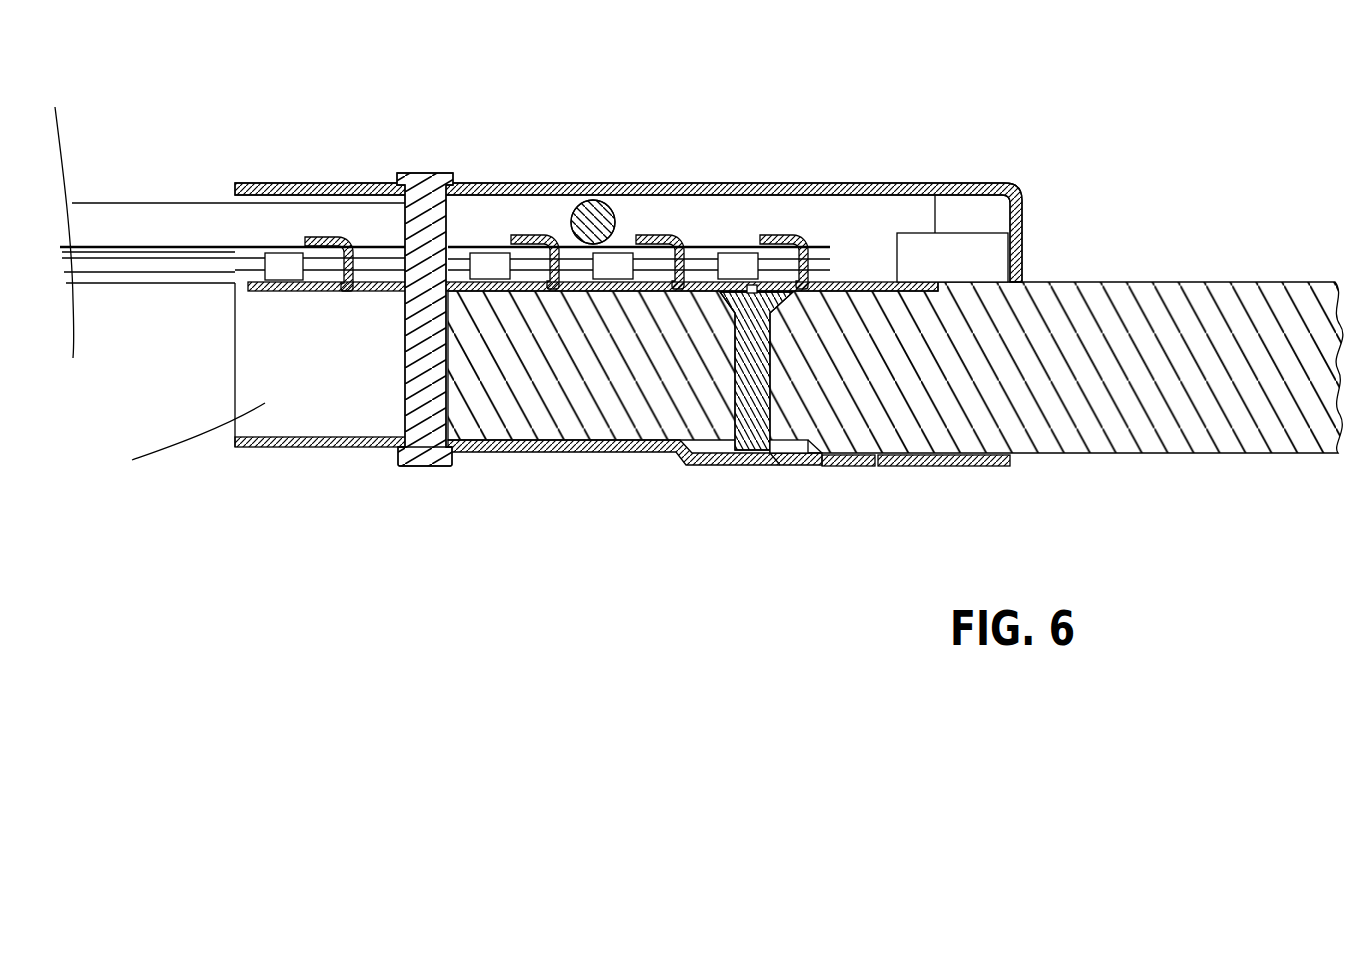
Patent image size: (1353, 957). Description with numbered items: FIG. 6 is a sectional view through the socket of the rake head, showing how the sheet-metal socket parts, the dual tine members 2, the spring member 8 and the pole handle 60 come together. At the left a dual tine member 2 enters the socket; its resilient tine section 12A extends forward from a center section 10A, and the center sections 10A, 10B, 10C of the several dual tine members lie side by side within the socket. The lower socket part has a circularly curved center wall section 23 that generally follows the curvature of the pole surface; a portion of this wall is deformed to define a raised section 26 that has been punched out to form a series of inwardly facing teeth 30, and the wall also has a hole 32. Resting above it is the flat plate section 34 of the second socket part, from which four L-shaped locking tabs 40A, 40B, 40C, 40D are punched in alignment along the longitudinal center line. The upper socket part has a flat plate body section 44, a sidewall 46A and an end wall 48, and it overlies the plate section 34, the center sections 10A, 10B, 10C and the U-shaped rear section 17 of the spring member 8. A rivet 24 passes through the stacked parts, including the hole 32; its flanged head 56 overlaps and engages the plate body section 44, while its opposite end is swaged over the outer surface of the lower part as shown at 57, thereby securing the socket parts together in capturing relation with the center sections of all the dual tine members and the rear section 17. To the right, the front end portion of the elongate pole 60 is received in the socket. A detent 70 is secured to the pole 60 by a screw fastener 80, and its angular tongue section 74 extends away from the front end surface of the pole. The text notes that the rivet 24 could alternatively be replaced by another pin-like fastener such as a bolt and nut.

The U-shaped spring member 8 is at (145, 180).
The resilient tine section 12A is at (120, 280).
The dual tine member 2 is at (205, 292).
The circularly curved center wall section 23 is at (233, 450).
The hole 32 is at (413, 433).
The rivet 24 is at (987, 158).
The flat plate section 34 is at (853, 282).
The pole 60 is at (1162, 470).
The screw fastener 80 is at (716, 378).
The raised section 26 is at (732, 467).
The detent 70 is at (792, 422).
The angular tongue section 74 is at (822, 460).
The inwardly facing teeth 30 is at (837, 467).
The flat plate body section 44 is at (665, 250).
The center section 10A is at (323, 263).
The center section 10B is at (510, 247).
The center section 10C is at (648, 263).
The L-shaped locking tab 40A is at (317, 238).
The L-shaped locking tab 40B is at (530, 263).
The L-shaped locking tab 40C is at (690, 255).
The L-shaped locking tab 40D is at (812, 252).
The U-shaped rear section 17 is at (603, 203).
The end wall 48 is at (1022, 258).
The sidewall 46A is at (936, 215).
The flanged head 56 is at (422, 172).
The swaged end 57 is at (428, 465).